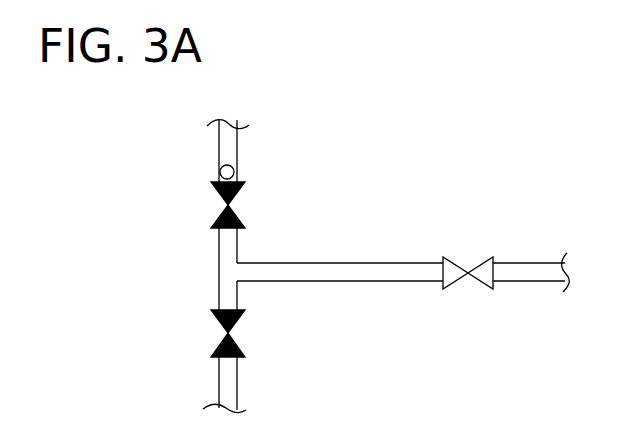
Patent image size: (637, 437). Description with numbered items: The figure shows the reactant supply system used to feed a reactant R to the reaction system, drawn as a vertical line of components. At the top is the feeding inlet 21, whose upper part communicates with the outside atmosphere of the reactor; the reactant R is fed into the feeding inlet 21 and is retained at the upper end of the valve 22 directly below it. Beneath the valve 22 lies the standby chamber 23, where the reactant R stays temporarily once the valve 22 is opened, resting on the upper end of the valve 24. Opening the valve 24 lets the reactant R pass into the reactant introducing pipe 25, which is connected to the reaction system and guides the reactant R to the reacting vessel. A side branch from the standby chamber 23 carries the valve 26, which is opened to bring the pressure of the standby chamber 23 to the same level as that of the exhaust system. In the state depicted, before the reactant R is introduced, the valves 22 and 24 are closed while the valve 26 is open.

The feeding inlet 21 is at (218, 150).
The reactant R is at (233, 172).
The valve 22 is at (243, 188).
The standby chamber 23 is at (218, 276).
The valve 24 is at (244, 318).
The reactant introducing pipe 25 is at (218, 386).
The valve 26 is at (460, 262).